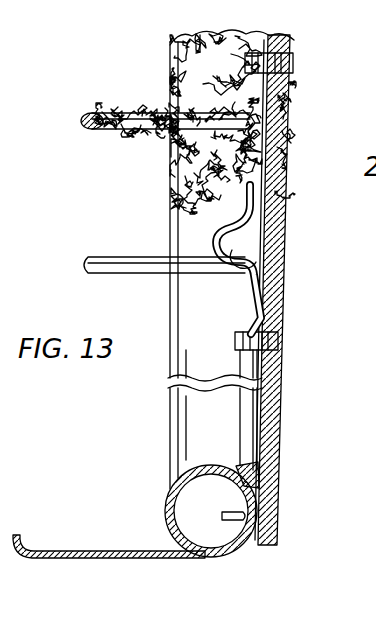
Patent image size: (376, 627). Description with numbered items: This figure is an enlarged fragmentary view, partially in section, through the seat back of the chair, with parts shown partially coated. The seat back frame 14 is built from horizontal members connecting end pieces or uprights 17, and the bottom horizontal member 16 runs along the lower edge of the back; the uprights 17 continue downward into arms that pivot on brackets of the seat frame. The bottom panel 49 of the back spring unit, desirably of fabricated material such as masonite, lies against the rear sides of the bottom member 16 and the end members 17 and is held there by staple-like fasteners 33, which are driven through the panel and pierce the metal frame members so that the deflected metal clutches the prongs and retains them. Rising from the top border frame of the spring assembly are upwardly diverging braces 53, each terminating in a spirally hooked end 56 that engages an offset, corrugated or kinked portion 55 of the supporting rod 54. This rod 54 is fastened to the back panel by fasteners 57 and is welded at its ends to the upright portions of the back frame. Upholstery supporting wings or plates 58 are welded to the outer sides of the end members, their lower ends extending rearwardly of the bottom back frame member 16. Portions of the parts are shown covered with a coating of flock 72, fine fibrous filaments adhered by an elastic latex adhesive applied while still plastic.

The seat back frame 14 is at (160, 459).
The bottom horizontal member 16 is at (186, 424).
The end piece or upright 17 is at (170, 502).
The staple-like fastener 33 is at (236, 521).
The bottom panel 49 is at (279, 427).
The upwardly diverging brace 53 is at (86, 262).
The supporting rod 54 is at (250, 365).
The offset and corrugated or kinked portion 55 is at (246, 230).
The spirally hooked end 56 is at (248, 256).
The fastener 57 is at (293, 63).
The upholstery supporting wing or plate 58 is at (84, 555).
The flock coating 72 is at (133, 140).